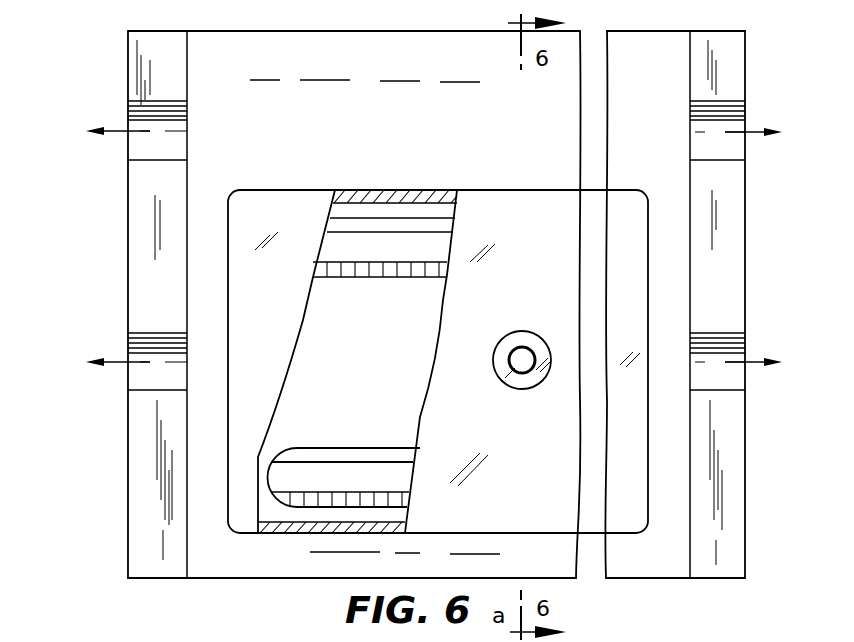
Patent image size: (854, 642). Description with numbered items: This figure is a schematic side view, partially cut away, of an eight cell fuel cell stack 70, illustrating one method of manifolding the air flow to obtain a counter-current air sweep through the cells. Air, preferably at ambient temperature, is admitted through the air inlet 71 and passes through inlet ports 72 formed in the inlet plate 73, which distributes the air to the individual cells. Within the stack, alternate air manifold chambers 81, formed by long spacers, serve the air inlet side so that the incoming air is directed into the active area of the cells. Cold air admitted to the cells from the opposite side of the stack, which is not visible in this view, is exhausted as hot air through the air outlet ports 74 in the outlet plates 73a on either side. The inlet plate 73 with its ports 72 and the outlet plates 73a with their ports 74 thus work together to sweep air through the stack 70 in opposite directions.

The fuel cell stack 70 is at (760, 80).
The air inlet 71 is at (512, 364).
The inlet ports 72 is at (396, 276).
The inlet plate 73 is at (344, 406).
The outlet plates 73a is at (137, 516).
The air outlet ports 74 is at (140, 150).
The air manifold chambers 81 is at (400, 258).